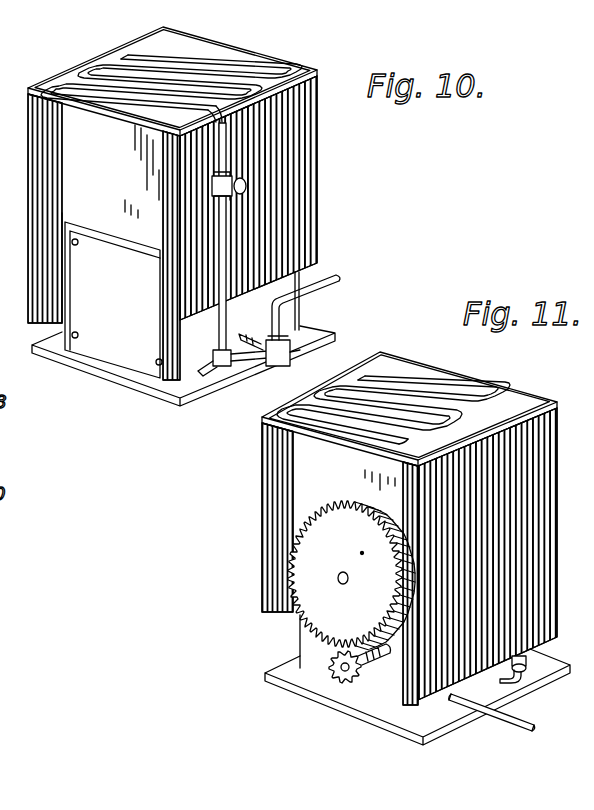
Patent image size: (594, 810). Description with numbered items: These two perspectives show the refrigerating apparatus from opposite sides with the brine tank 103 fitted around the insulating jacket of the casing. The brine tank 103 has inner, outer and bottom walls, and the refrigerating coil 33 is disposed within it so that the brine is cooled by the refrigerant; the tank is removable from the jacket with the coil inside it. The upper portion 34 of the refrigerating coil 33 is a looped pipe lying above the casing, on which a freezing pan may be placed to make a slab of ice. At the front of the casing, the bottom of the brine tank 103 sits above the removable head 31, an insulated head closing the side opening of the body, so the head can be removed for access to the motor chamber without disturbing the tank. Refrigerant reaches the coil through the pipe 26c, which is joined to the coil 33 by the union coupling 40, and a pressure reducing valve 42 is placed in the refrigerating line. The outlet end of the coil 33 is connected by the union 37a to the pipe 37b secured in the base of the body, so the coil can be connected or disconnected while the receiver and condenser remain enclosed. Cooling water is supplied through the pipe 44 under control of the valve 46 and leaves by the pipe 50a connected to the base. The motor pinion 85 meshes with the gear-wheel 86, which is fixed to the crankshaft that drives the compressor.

In FIG. 10, the refrigerating coil 33 is at (168, 125).
In FIG. 11, the refrigerating coil 33 is at (399, 352).
In FIG. 10, the upper portion of the refrigerating coil 34 is at (181, 67).
In FIG. 11, the upper portion of the refrigerating coil 34 is at (460, 407).
In FIG. 10, the brine tank 103 is at (172, 228).
In FIG. 11, the brine tank 103 is at (533, 532).
In FIG. 10, the pressure reducing valve 42 is at (211, 188).
In FIG. 10, the removable head 31 is at (112, 295).
In FIG. 10, the union coupling 40 is at (219, 357).
In FIG. 10, the pipe 44 is at (320, 288).
In FIG. 10, the valve 46 is at (290, 360).
In FIG. 10, the pipe 26c is at (182, 402).
In FIG. 11, the gear-wheel 86 is at (351, 575).
In FIG. 11, the pinion 85 is at (340, 684).
In FIG. 11, the union 37a is at (528, 661).
In FIG. 11, the pipe 37b is at (522, 676).
In FIG. 11, the pipe 50a is at (518, 722).